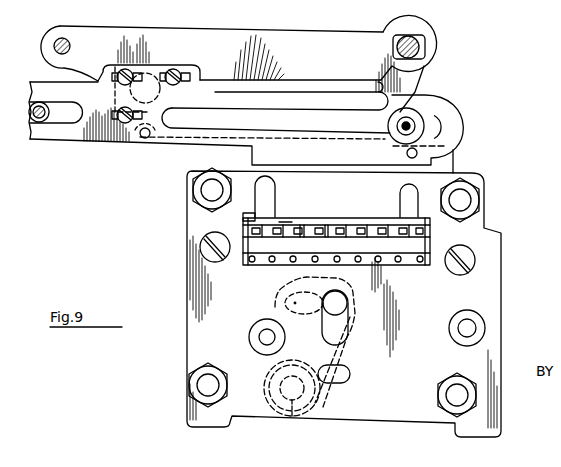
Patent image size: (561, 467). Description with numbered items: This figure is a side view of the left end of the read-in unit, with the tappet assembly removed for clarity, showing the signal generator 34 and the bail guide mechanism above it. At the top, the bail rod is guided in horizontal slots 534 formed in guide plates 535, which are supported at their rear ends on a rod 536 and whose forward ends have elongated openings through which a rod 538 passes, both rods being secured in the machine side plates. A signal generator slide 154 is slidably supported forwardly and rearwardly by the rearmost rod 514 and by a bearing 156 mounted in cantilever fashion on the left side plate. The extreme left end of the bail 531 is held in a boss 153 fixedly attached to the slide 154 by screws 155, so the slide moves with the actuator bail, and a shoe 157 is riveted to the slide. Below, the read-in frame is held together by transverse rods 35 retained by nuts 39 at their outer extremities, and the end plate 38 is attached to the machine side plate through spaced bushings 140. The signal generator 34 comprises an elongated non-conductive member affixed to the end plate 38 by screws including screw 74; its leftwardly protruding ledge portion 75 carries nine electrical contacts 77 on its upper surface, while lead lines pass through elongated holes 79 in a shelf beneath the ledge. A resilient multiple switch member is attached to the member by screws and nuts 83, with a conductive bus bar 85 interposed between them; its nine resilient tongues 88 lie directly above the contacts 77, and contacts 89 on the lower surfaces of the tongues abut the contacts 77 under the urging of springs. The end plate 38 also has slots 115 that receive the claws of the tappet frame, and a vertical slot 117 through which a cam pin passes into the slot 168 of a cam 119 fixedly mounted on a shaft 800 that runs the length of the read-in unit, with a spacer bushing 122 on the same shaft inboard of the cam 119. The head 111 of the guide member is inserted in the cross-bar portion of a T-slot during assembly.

The signal generator 34 is at (509, 286).
The transverse rods 35 is at (205, 172).
The end plate 38 is at (410, 388).
The nuts 39 is at (199, 190).
The screw 74 is at (200, 240).
The ledge portion 75 is at (412, 262).
The electrical contacts 77 is at (367, 233).
The elongated holes 79 is at (272, 261).
The nuts 83 is at (246, 214).
The conductive bus bar 85 is at (285, 222).
The resilient tongues 88 is at (305, 227).
The contacts 89 is at (330, 227).
The head 111 is at (350, 378).
The slots 115 is at (268, 186).
The vertical slot 117 is at (345, 320).
The cam 119 is at (338, 357).
The spacer bushing 122 is at (325, 399).
The spaced bushings 140 is at (252, 340).
The boss 153 is at (168, 66).
The signal generator slide 154 is at (336, 109).
The screws 155 is at (130, 143).
The bearing 156 is at (418, 108).
The shoe 157 is at (458, 164).
The slot 168 is at (283, 300).
The rod 514 is at (40, 122).
The bail 531 is at (162, 94).
The horizontal slots 534 is at (315, 81).
The guide plates 535 is at (310, 58).
The rod 536 is at (68, 38).
The rod 538 is at (428, 52).
The shaft 800 is at (292, 418).